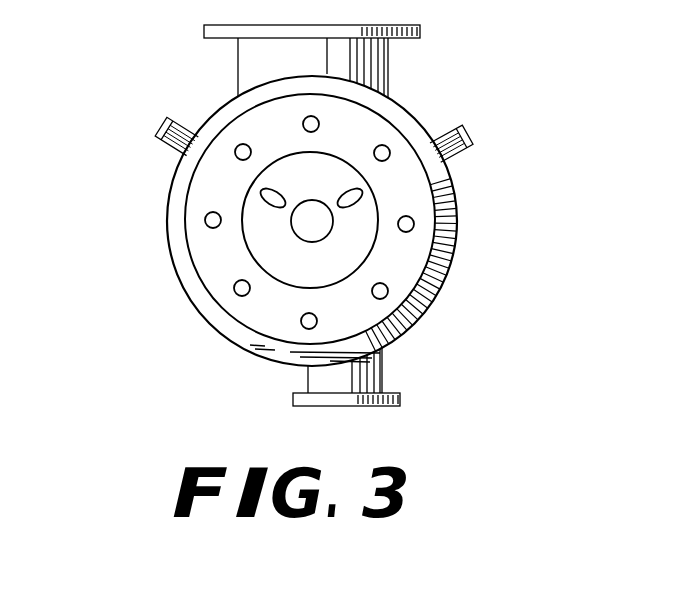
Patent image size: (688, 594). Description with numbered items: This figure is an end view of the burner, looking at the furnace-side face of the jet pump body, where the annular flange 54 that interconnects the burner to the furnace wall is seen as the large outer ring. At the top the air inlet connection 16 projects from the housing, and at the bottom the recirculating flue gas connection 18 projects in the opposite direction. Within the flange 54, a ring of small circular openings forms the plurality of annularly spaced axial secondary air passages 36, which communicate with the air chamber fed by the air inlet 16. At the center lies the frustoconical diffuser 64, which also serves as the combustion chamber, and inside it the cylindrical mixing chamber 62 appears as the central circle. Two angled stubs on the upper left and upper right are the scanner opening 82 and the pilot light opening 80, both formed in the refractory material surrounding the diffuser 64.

The air inlet connection 16 is at (383, 60).
The recirculating flue gas connection 18 is at (382, 380).
The secondary air passages 36 is at (234, 287).
The annular flange 54 is at (452, 212).
The mixing chamber 62 is at (313, 213).
The diffuser 64 is at (314, 268).
The pilot light opening 80 is at (468, 153).
The scanner opening 82 is at (172, 141).